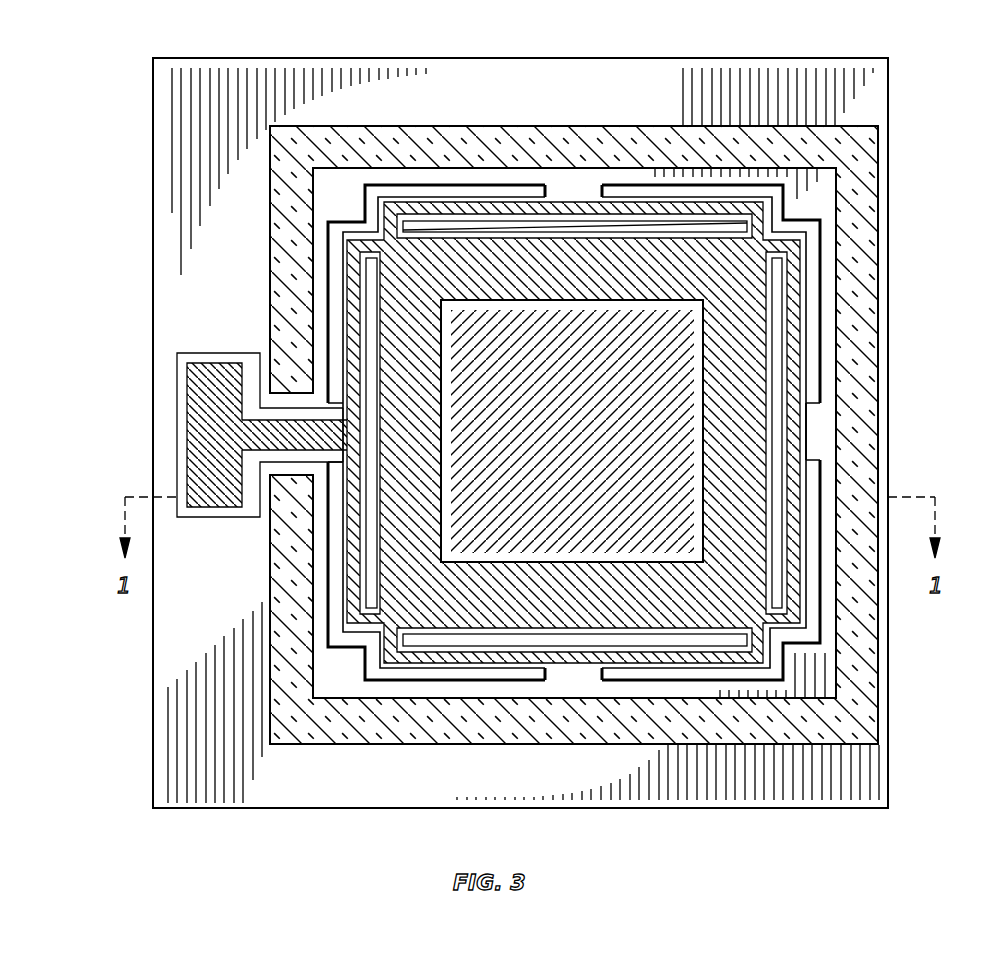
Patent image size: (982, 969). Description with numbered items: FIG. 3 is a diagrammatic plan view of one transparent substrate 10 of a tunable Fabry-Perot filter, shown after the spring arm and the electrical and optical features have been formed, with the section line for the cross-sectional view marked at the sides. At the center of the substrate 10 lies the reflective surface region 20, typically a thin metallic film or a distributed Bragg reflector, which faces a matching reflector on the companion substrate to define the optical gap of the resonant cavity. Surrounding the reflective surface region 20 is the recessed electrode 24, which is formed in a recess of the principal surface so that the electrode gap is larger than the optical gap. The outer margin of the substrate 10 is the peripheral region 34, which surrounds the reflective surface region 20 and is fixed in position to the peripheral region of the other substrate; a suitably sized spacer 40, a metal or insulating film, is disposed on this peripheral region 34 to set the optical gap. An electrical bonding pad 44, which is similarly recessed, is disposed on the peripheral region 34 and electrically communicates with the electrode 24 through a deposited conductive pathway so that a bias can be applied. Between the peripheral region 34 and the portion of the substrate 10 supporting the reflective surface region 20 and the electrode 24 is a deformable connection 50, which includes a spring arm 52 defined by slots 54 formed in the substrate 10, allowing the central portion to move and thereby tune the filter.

The substrate 10 is at (796, 72).
The reflective surface region 20 is at (592, 446).
The recessed electrode 24 is at (752, 516).
The peripheral region 34 is at (263, 546).
The spacer 40 is at (592, 734).
The electrical bonding pad 44 is at (200, 437).
The deformable connection 50 is at (803, 452).
The spring arm 52 is at (778, 565).
The slots 54 is at (818, 577).